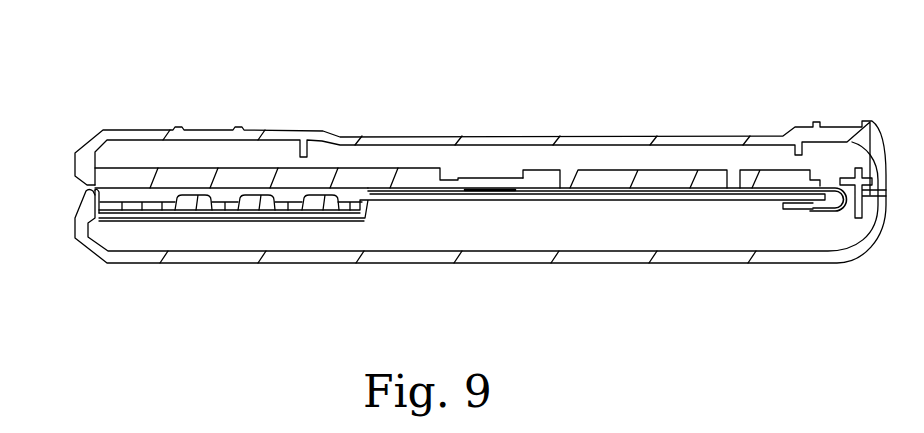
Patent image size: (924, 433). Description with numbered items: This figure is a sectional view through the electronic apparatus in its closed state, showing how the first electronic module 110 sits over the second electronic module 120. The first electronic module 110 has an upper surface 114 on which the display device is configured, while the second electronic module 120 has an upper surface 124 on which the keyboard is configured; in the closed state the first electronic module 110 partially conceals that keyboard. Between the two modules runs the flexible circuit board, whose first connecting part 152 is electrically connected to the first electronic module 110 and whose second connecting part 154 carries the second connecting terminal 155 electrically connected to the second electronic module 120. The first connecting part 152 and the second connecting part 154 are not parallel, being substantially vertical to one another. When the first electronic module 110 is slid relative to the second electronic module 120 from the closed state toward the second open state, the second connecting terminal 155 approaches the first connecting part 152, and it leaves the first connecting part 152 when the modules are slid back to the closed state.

The first electronic module 110 is at (543, 182).
The upper surface 114 is at (392, 188).
The second electronic module 120 is at (561, 200).
The upper surface 124 is at (297, 217).
The first connecting part 152 is at (481, 190).
The second connecting part 154 is at (682, 187).
The second connecting terminal 155 is at (807, 209).